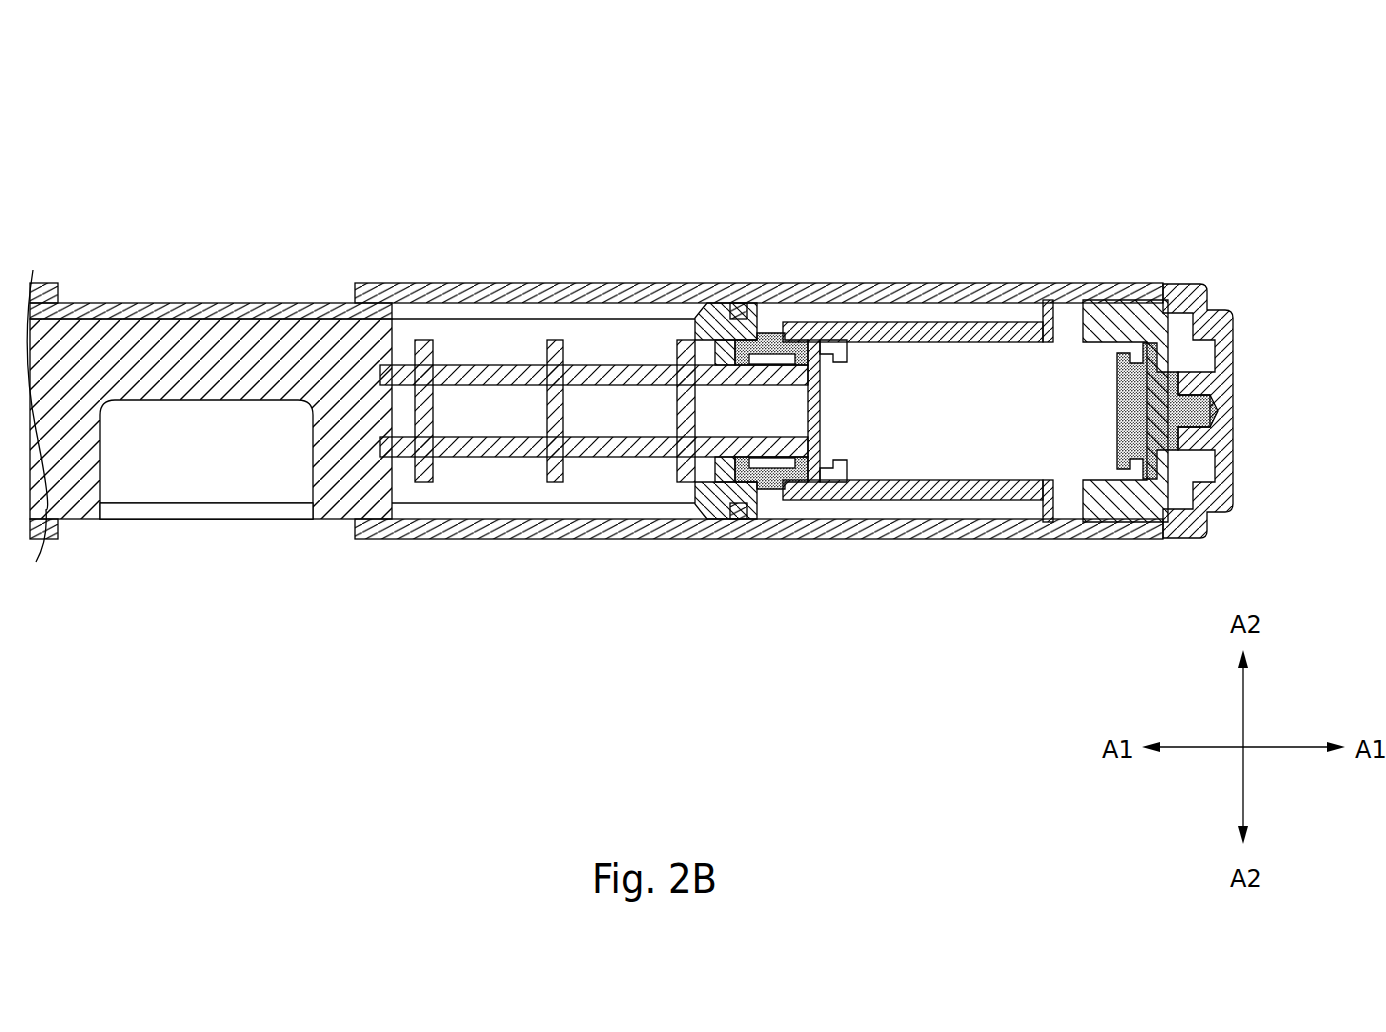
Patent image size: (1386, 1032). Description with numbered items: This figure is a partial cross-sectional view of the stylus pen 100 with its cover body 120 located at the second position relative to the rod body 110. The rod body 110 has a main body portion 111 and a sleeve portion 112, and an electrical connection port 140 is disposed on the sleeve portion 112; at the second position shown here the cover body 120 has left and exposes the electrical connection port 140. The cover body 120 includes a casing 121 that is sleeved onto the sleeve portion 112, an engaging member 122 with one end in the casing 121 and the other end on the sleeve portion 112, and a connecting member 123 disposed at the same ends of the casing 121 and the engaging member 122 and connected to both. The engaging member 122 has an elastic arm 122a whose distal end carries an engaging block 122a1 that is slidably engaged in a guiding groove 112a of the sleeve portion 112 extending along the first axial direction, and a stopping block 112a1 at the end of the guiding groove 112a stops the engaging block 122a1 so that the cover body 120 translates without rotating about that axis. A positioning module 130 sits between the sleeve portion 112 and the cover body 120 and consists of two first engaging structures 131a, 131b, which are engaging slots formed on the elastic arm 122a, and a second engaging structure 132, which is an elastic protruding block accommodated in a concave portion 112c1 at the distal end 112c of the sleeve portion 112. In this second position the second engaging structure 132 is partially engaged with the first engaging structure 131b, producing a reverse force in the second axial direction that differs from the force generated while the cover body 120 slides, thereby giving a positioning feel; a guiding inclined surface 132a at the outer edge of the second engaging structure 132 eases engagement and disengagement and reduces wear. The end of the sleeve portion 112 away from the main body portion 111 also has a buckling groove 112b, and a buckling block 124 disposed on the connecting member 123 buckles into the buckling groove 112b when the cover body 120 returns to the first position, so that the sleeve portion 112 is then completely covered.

The stylus pen 100 is at (1208, 80).
The rod body 110 is at (223, 205).
The main body portion 111 is at (47, 283).
The sleeve portion 112 is at (207, 318).
The guiding groove 112a is at (542, 292).
The stopping block 112a1 is at (737, 305).
The buckling groove 112b is at (838, 492).
The distal end 112c is at (500, 365).
The concave portion 112c1 is at (825, 324).
The cover body 120 is at (1320, 228).
The casing 121 is at (1165, 330).
The engaging member 122 is at (1180, 311).
The elastic arm 122a is at (990, 336).
The engaging block 122a1 is at (806, 344).
The connecting member 123 is at (1216, 383).
The buckling block 124 is at (1157, 412).
The positioning module 130 is at (490, 715).
The first engaging structure 131a is at (1070, 292).
The first engaging structure 131b is at (771, 314).
The second engaging structure 132 is at (704, 305).
The guiding inclined surface 132a is at (812, 322).
The electrical connection port 140 is at (252, 526).